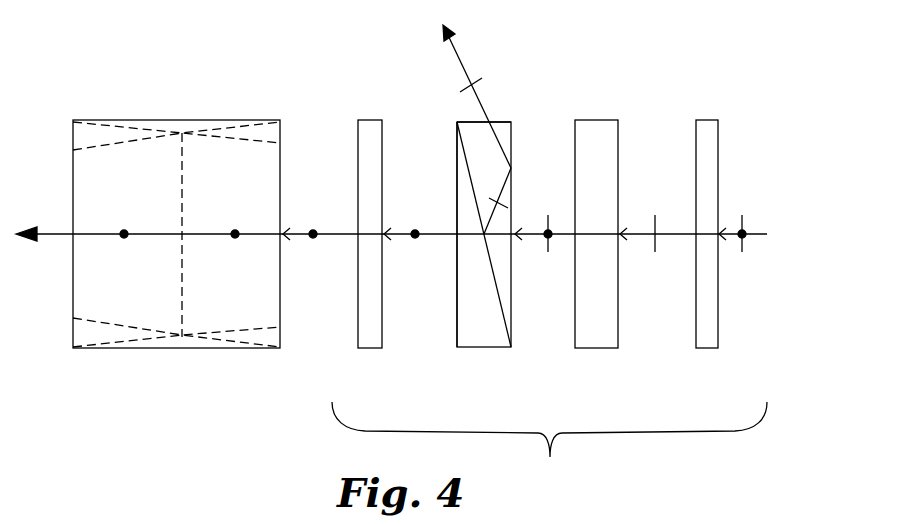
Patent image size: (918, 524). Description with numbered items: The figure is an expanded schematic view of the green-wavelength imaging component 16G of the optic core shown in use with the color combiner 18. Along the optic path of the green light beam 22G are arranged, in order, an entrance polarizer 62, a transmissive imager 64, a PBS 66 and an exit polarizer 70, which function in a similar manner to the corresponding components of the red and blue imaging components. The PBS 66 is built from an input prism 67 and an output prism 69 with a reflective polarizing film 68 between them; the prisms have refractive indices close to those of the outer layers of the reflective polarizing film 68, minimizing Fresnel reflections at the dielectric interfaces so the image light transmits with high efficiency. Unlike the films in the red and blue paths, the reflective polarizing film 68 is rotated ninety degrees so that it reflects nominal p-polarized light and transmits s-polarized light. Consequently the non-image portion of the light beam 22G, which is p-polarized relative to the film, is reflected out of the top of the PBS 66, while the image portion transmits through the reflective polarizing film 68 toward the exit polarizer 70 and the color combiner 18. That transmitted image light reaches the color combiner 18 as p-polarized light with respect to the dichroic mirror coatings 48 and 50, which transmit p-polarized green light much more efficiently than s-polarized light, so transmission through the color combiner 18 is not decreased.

The imaging component 16G is at (549, 444).
The color combiner 18 is at (150, 244).
The light beam 22G is at (755, 232).
The dichroic mirror coating 48 is at (227, 158).
The dichroic mirror coating 50 is at (90, 208).
The entrance polarizer 62 is at (708, 350).
The transmissive imager 64 is at (600, 350).
The PBS 66 is at (453, 248).
The input prism 67 is at (470, 120).
The reflective polarizing film 68 is at (490, 270).
The output prism 69 is at (457, 313).
The exit polarizer 70 is at (370, 348).